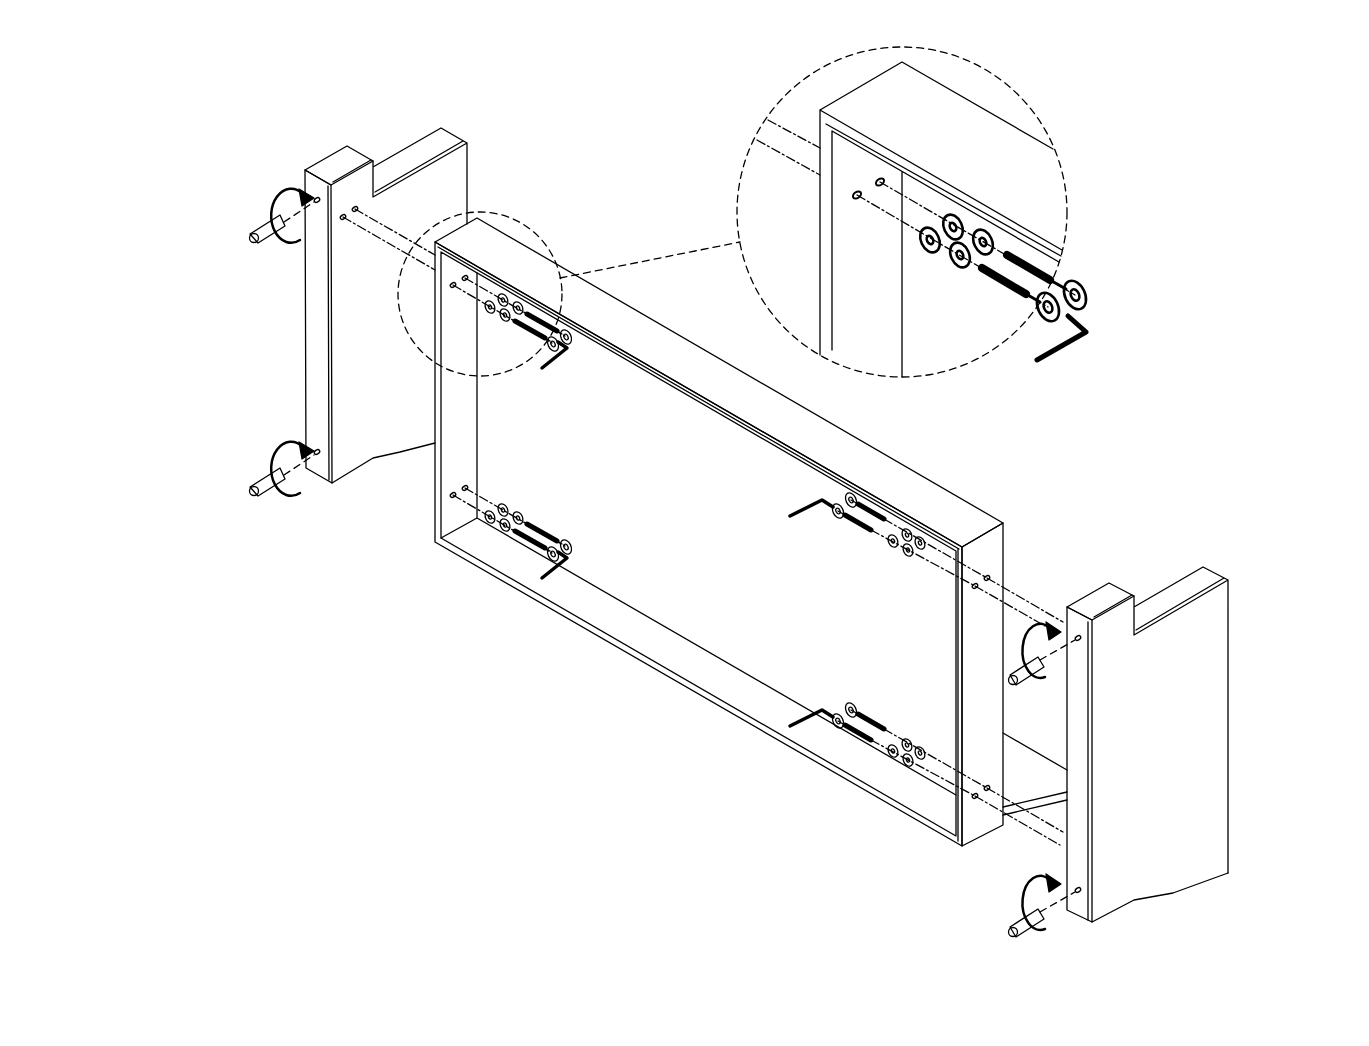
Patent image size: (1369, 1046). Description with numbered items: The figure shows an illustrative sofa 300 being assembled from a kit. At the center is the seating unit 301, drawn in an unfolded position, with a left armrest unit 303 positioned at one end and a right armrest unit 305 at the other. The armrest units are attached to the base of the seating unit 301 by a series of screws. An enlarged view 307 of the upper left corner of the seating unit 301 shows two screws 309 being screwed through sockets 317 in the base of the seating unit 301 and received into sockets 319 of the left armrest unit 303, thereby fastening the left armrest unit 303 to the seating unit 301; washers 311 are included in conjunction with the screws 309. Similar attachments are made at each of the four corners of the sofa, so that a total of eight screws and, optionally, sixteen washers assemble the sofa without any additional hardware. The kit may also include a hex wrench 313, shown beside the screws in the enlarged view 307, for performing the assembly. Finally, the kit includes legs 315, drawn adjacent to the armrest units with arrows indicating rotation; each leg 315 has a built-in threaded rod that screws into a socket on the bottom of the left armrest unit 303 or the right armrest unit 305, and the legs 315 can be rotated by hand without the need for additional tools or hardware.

The sofa 300 is at (1203, 98).
The seating unit 301 is at (893, 466).
The left armrest unit 303 is at (429, 305).
The right armrest unit 305 is at (1231, 660).
The enlarged view 307 is at (778, 208).
The screws 309 is at (1050, 298).
The washers 311 is at (961, 250).
The hex wrench 313 is at (1085, 330).
The legs 315 is at (262, 228).
The sockets 317 is at (858, 200).
The sockets 319 is at (346, 219).